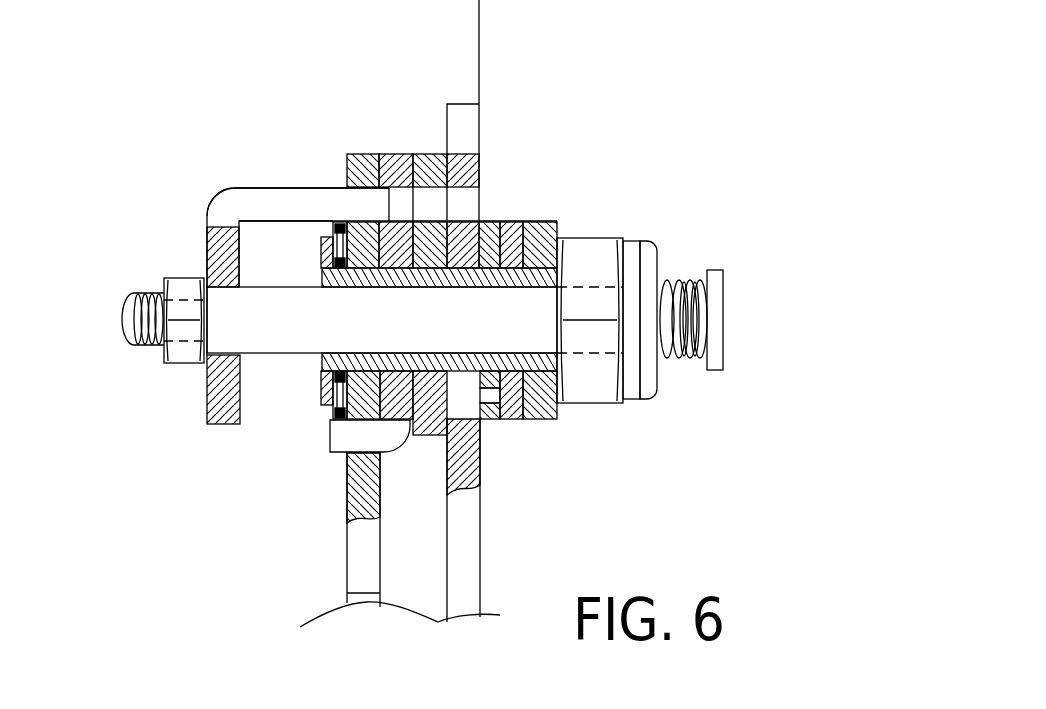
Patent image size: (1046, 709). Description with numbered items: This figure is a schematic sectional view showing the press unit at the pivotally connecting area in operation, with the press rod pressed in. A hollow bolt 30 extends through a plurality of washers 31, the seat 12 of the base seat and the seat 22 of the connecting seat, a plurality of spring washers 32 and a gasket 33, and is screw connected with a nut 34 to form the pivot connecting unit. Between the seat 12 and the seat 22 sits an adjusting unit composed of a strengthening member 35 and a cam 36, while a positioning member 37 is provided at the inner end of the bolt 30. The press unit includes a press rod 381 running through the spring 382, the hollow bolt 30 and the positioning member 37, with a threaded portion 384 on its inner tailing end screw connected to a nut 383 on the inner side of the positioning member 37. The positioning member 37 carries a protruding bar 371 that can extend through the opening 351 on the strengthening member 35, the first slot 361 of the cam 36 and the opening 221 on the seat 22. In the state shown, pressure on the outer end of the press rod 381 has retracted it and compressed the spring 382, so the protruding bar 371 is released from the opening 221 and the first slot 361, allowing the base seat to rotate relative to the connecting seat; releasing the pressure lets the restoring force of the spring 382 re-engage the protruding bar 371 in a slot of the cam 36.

The seat 12 is at (357, 155).
The seat 22 is at (470, 203).
The opening 221 is at (505, 220).
The bolt 30 is at (320, 248).
The washers 31 is at (332, 404).
The spring washers 32 is at (488, 423).
The gasket 33 is at (560, 223).
The nut 34 is at (595, 390).
The strengthening member 35 is at (380, 153).
The opening 351 is at (400, 198).
The cam 36 is at (432, 200).
The first slot 361 is at (433, 172).
The positioning member 37 is at (217, 247).
The protruding bar 371 is at (298, 193).
The press rod 381 is at (703, 272).
The spring 382 is at (685, 278).
The nut 383 is at (180, 285).
The threaded portion 384 is at (130, 322).